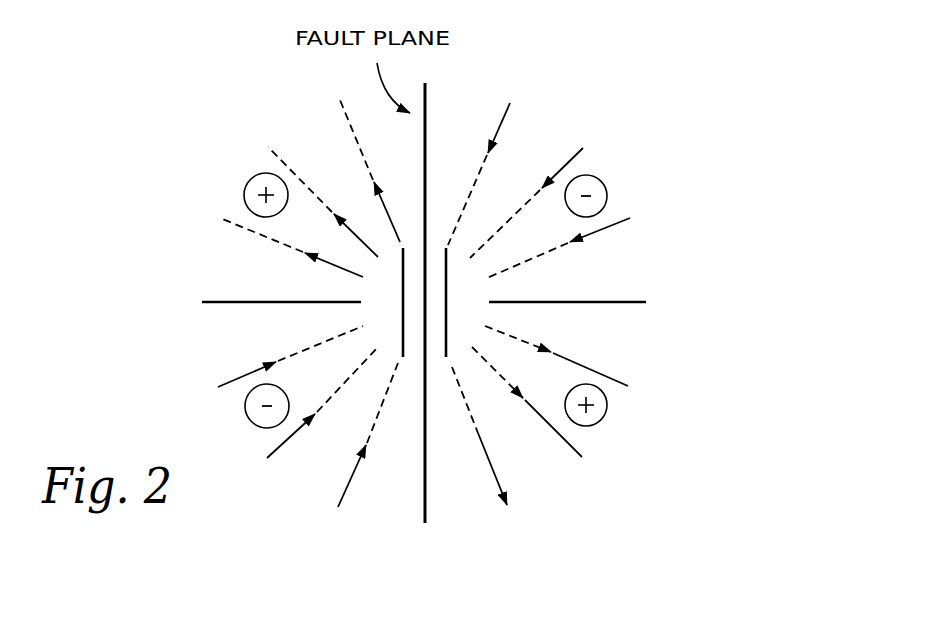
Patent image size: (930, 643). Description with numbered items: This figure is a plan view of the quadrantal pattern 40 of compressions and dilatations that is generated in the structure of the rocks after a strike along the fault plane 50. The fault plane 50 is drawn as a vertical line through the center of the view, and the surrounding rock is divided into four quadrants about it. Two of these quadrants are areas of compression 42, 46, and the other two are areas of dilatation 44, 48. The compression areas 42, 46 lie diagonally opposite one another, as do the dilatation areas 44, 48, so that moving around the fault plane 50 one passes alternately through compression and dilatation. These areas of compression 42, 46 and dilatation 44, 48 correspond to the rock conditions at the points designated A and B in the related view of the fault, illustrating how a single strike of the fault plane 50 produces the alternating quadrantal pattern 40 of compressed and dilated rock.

The first motion radiation pattern 40 is at (136, 313).
The area of compression 42 is at (155, 267).
The area of dilatation 44 is at (158, 358).
The area of compression 46 is at (637, 357).
The area of dilatation 48 is at (652, 292).
The fault plane 50 is at (425, 105).